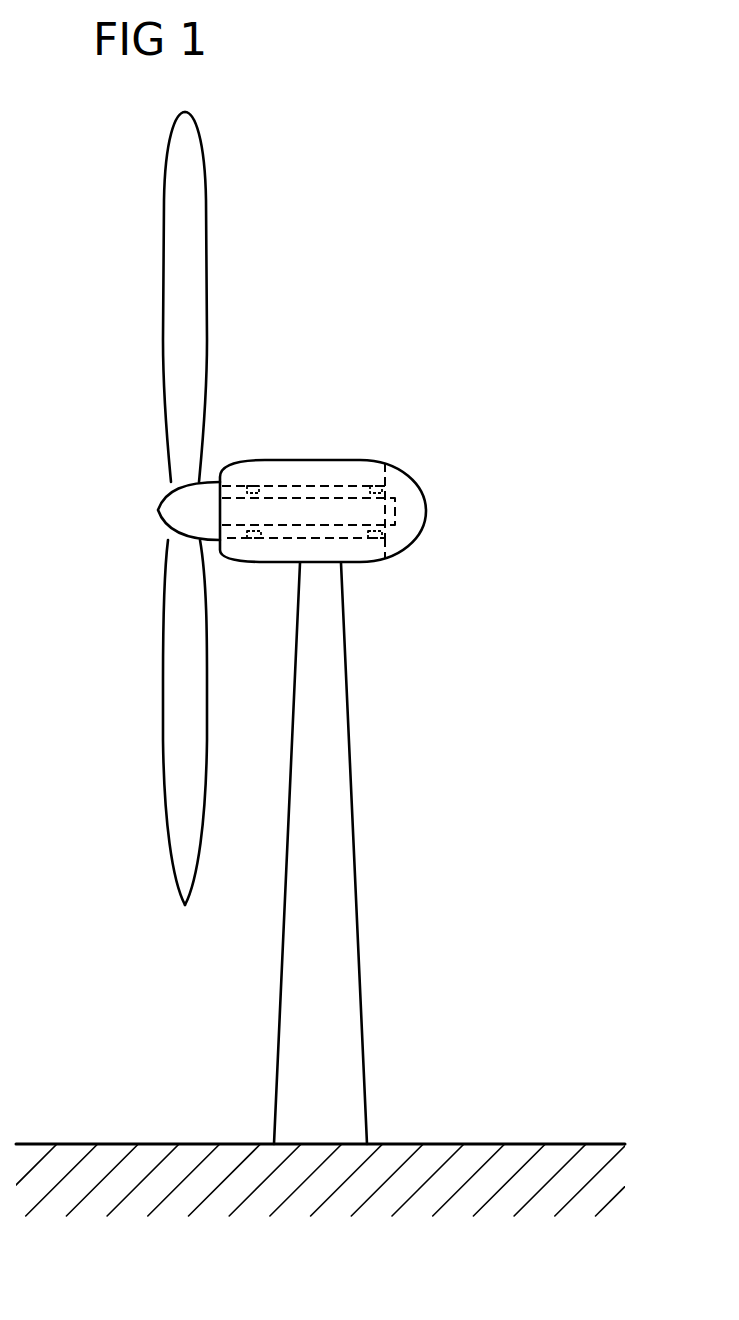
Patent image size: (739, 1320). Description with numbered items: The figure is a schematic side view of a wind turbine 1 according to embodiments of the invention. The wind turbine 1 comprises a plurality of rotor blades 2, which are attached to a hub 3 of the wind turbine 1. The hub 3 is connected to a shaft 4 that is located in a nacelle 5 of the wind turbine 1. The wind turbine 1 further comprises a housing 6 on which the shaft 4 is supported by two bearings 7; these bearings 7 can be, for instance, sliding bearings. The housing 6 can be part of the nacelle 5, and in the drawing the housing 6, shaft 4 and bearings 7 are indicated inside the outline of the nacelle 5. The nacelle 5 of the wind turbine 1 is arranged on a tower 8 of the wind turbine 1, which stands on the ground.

The wind turbine 1 is at (395, 284).
The rotor blades 2 is at (162, 317).
The hub 3 is at (157, 509).
The shaft 4 is at (387, 512).
The nacelle 5 is at (416, 467).
The housing 6 is at (315, 472).
The bearings 7 is at (253, 487).
The tower 8 is at (353, 788).